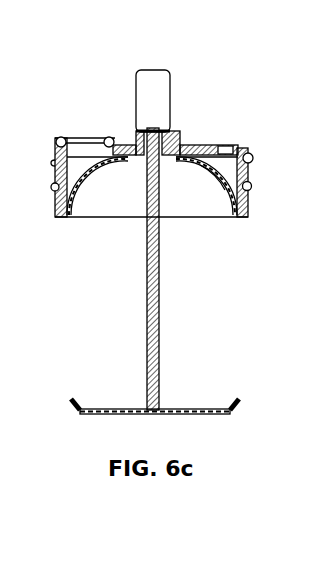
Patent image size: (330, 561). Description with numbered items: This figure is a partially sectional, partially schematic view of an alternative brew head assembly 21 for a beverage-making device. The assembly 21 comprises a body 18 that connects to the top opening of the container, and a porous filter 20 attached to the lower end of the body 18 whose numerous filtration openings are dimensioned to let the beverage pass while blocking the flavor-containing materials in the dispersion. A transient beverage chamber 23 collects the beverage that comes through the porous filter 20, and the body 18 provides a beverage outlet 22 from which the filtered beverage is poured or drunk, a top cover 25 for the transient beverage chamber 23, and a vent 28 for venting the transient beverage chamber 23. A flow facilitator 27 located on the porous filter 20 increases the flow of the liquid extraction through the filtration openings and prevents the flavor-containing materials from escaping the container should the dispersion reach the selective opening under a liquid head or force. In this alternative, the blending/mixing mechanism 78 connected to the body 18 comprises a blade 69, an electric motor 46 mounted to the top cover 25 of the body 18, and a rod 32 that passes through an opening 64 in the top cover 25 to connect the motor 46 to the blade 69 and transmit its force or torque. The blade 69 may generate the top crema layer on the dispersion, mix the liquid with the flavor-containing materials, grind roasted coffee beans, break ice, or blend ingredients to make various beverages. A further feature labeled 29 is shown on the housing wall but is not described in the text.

The body 18 is at (248, 206).
The porous filter 20 is at (112, 180).
The brew head assembly 21 is at (57, 128).
The beverage outlet 22 is at (80, 140).
The transient beverage chamber 23 is at (97, 150).
The top cover 25 is at (196, 150).
The flow facilitator 27 is at (206, 193).
The vent 28 is at (229, 147).
The right dome 29 is at (222, 181).
The rod 32 is at (159, 310).
The electric motor 46 is at (150, 84).
The opening 64 is at (166, 150).
The blade 69 is at (175, 410).
The blending/mixing mechanism 78 is at (155, 374).